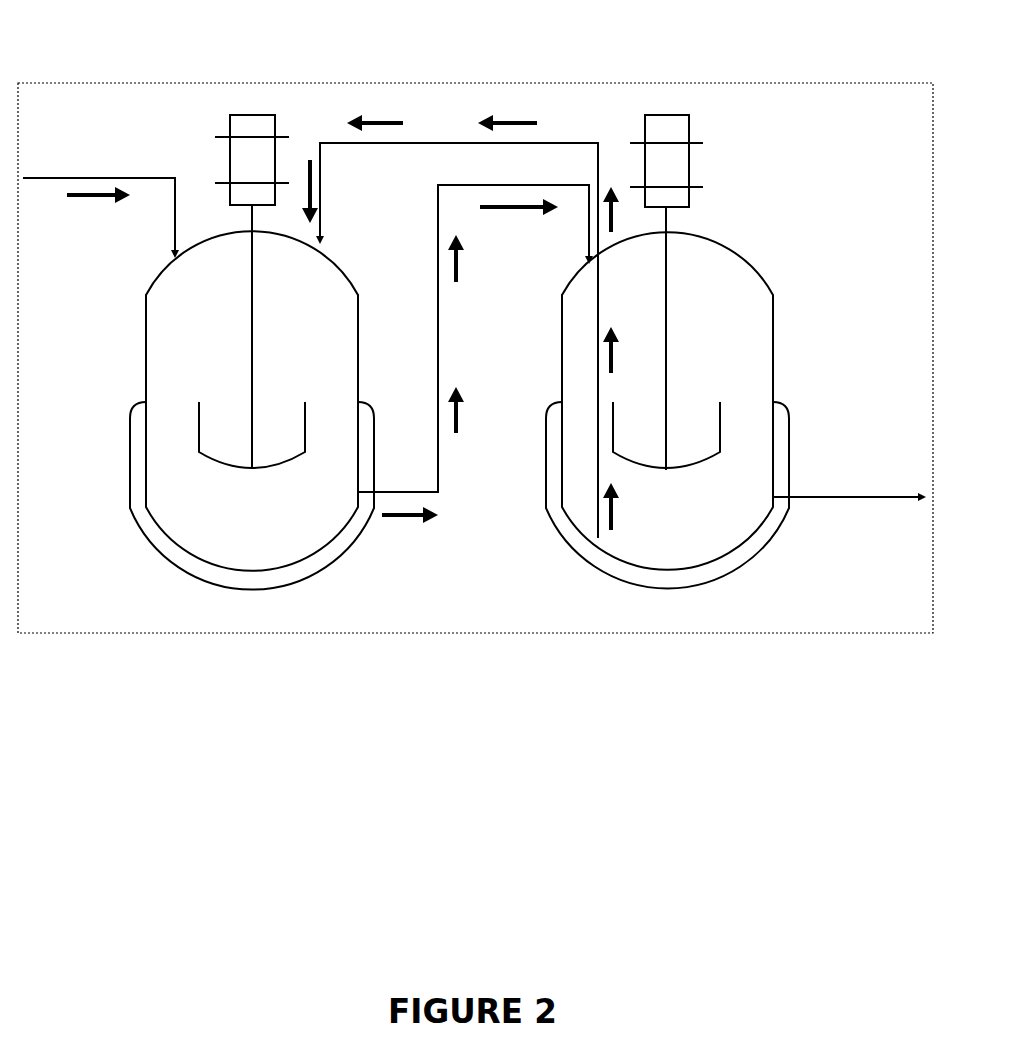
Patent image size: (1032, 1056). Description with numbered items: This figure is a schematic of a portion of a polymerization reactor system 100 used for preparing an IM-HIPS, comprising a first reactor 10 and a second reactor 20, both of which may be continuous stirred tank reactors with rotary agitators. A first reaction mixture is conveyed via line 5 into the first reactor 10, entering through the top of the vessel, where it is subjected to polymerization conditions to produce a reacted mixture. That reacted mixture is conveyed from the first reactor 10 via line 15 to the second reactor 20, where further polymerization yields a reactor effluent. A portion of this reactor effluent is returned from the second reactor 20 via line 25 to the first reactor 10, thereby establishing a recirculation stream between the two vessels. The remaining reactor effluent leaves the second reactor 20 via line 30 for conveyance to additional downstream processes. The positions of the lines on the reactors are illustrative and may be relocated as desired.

The reactor system 100 is at (475, 338).
The line 5 is at (101, 200).
The first reactor 10 is at (152, 542).
The line 15 is at (438, 340).
The second reactor 20 is at (578, 553).
The line 25 is at (460, 320).
The line 30 is at (849, 485).